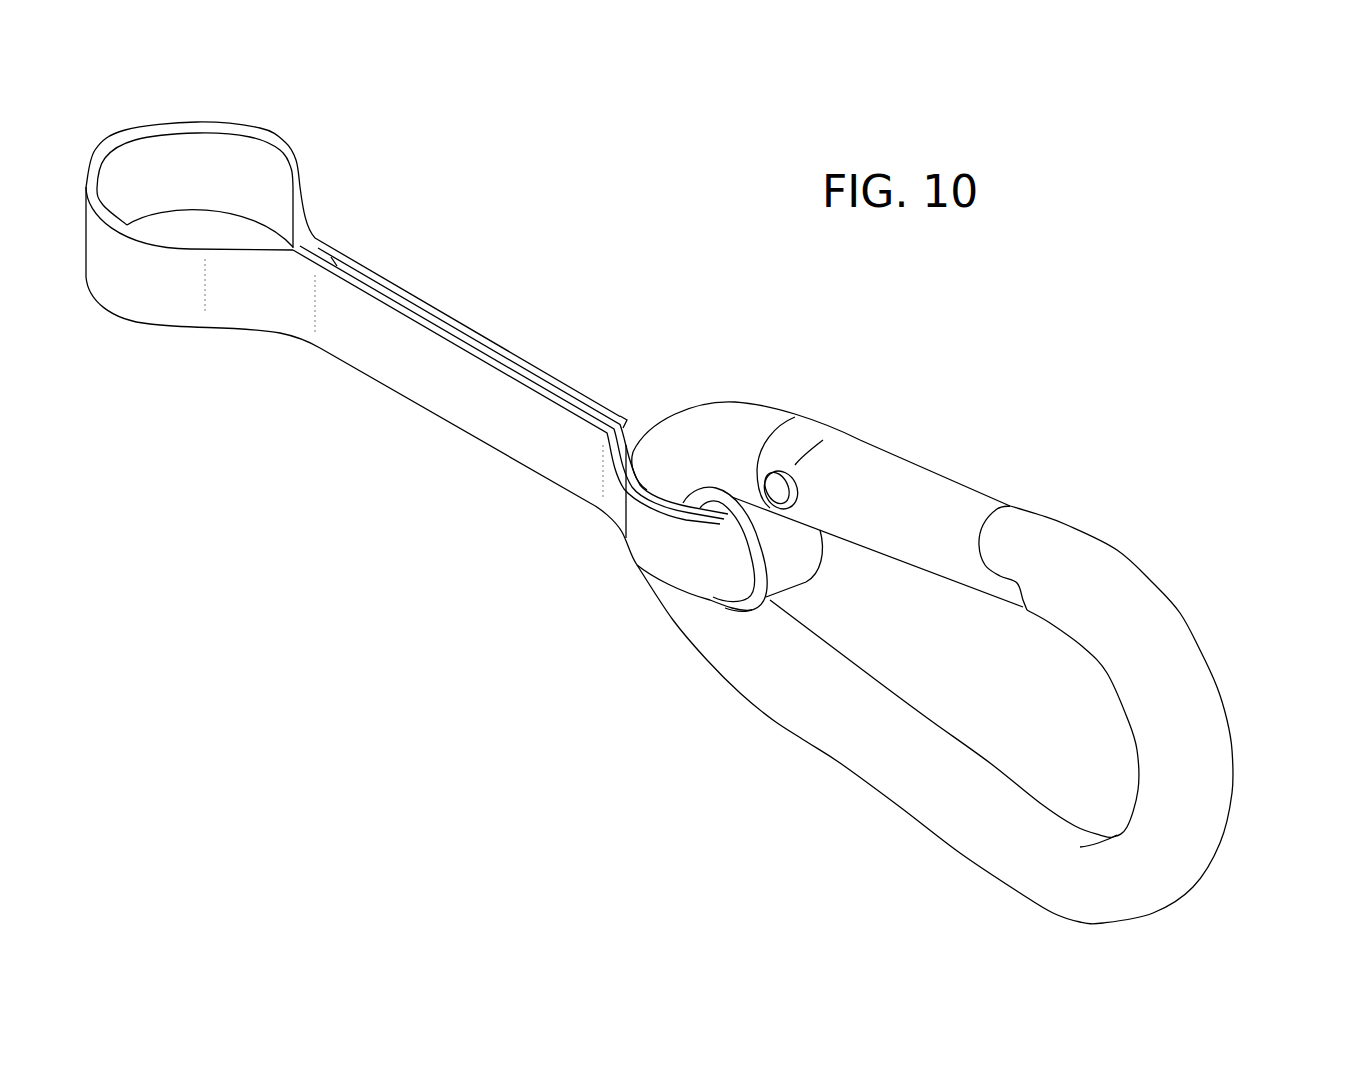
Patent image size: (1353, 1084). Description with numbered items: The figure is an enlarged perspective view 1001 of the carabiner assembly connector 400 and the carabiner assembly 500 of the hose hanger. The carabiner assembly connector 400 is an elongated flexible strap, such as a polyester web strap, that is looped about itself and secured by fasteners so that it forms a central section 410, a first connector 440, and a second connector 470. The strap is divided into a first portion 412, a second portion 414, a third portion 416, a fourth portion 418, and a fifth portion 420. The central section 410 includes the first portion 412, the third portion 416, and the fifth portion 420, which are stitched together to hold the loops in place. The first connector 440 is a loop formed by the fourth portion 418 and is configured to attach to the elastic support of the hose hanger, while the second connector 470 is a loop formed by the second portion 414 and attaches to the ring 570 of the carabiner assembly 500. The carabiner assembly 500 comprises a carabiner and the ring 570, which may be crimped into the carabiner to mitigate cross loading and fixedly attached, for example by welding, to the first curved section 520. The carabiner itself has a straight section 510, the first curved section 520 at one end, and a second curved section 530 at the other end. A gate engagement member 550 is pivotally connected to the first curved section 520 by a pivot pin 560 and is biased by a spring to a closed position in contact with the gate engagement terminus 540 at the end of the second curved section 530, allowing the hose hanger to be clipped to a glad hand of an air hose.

The enlarged perspective view 1001 is at (1228, 262).
The carabiner assembly connector 400 is at (296, 547).
The central section 410 is at (415, 404).
The first portion 412 is at (408, 298).
The second portion 414 is at (398, 377).
The third portion 416 is at (428, 328).
The fourth portion 418 is at (260, 142).
The fifth portion 420 is at (535, 370).
The first connector 440 is at (138, 318).
The second connector 470 is at (636, 563).
The carabiner assembly 500 is at (786, 800).
The straight section 510 is at (900, 807).
The first curved section 520 is at (690, 425).
The second curved section 530 is at (1202, 746).
The gate engagement terminus 540 is at (1040, 530).
The gate engagement member 550 is at (906, 458).
The pivot pin 560 is at (784, 487).
The ring 570 is at (803, 573).